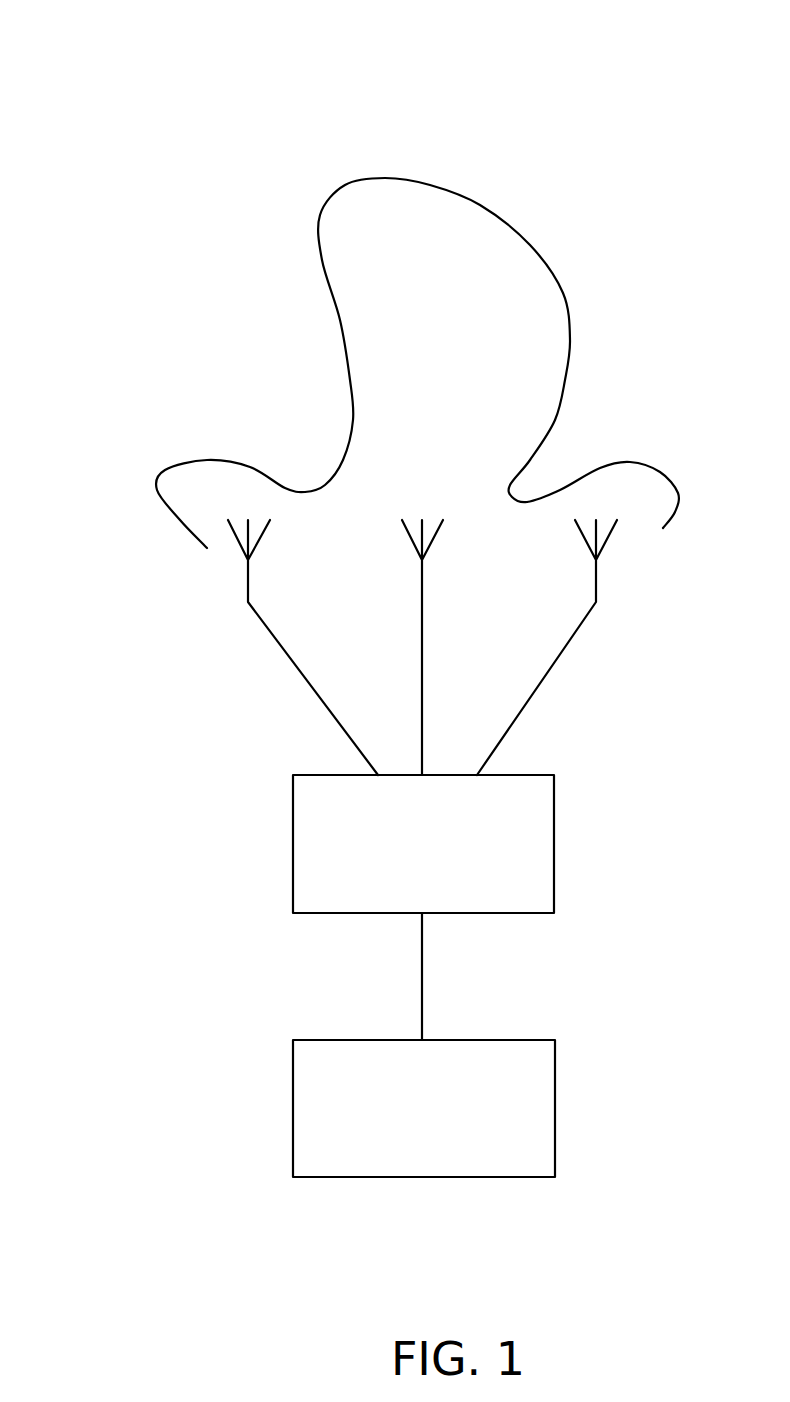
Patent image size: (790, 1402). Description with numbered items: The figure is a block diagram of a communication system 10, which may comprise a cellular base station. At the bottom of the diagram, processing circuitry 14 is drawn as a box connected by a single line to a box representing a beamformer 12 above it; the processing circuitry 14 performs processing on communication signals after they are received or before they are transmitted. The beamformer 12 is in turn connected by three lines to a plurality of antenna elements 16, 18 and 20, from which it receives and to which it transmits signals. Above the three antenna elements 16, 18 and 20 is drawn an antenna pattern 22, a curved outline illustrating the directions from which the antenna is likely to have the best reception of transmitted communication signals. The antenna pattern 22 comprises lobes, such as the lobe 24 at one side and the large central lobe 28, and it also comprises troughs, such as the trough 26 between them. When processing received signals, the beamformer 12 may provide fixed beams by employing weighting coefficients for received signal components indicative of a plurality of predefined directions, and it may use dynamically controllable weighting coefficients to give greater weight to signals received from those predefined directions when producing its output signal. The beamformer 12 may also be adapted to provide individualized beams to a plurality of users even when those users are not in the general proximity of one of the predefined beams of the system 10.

The communication system 10 is at (412, 1265).
The beamformer 12 is at (555, 822).
The processing circuitry 14 is at (557, 1100).
The antenna element 16 is at (248, 578).
The antenna element 18 is at (422, 582).
The antenna element 20 is at (596, 582).
The antenna pattern 22 is at (563, 295).
The lobe 24 is at (129, 457).
The trough 26 is at (267, 378).
The lobe 28 is at (414, 120).